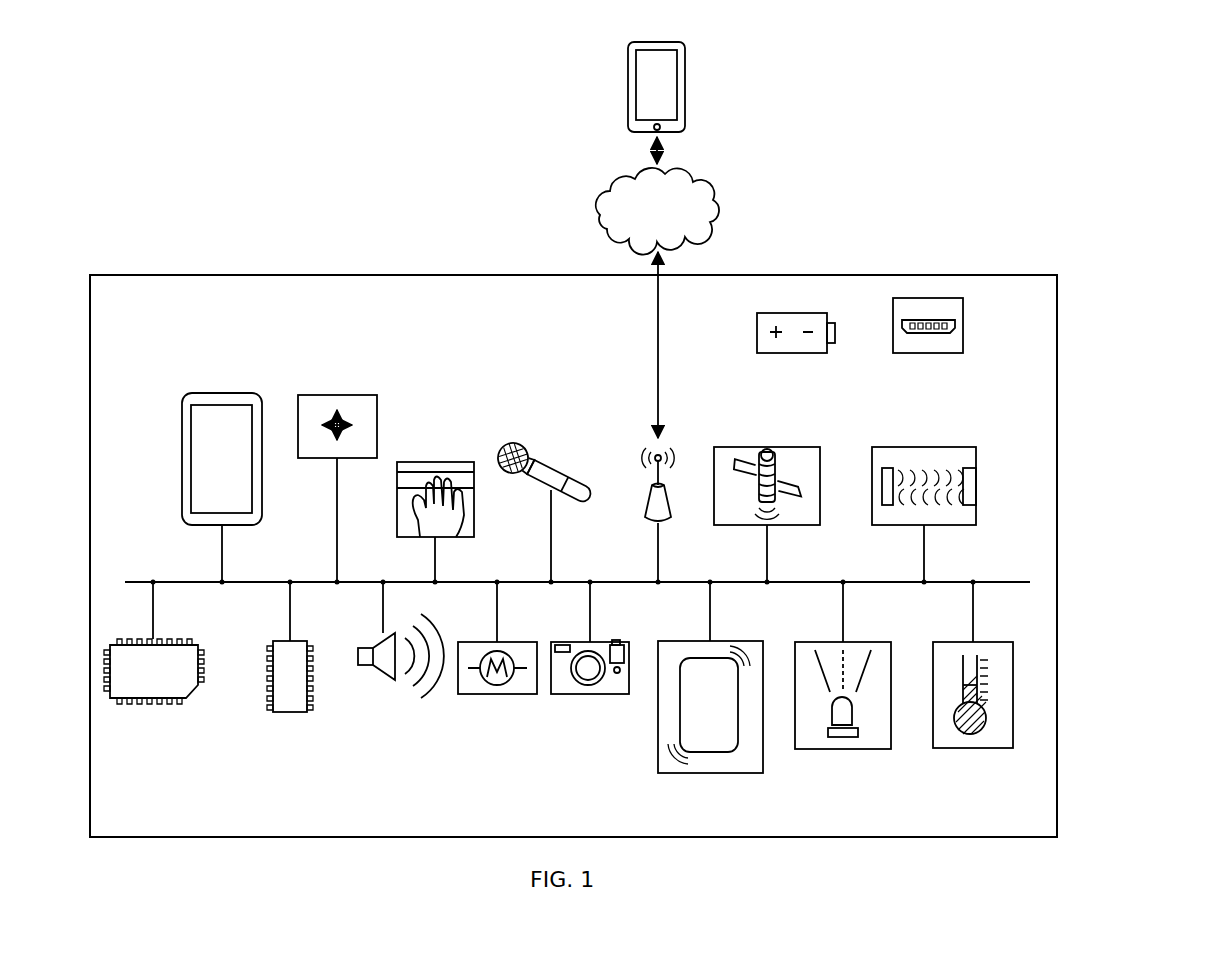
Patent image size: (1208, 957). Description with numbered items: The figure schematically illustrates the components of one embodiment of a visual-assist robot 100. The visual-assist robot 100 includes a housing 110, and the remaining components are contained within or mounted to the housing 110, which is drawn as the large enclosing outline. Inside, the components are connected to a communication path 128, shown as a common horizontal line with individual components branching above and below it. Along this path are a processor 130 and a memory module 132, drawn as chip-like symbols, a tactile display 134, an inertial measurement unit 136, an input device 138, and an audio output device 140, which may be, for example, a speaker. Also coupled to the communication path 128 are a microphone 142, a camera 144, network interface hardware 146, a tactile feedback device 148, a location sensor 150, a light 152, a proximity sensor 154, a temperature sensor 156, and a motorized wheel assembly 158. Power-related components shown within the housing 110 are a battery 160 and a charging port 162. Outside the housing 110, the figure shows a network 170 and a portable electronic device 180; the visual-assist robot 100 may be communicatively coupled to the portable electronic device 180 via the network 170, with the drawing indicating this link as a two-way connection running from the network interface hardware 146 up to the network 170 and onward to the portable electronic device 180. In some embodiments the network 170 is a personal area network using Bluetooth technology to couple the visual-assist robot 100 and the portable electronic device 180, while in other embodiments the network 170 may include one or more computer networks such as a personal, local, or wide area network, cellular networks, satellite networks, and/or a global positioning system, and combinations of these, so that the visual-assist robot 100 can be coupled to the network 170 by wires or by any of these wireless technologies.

The visual-assist robot 100 is at (1100, 294).
The housing 110 is at (1057, 449).
The communication path 128 is at (125, 582).
The processor 130 is at (190, 700).
The memory module 132 is at (290, 712).
The tactile display 134 is at (220, 393).
The inertial measurement unit 136 is at (337, 395).
The input device 138 is at (435, 462).
The audio output device 140 is at (383, 680).
The microphone 142 is at (554, 474).
The camera 144 is at (590, 694).
The network interface hardware 146 is at (652, 489).
The tactile feedback device 148 is at (710, 773).
The location sensor 150 is at (767, 447).
The light 152 is at (843, 749).
The proximity sensor 154 is at (924, 447).
The temperature sensor 156 is at (973, 748).
The motorized wheel assembly 158 is at (497, 694).
The battery 160 is at (757, 333).
The charging port 162 is at (963, 327).
The network 170 is at (600, 208).
The portable electronic device 180 is at (628, 70).